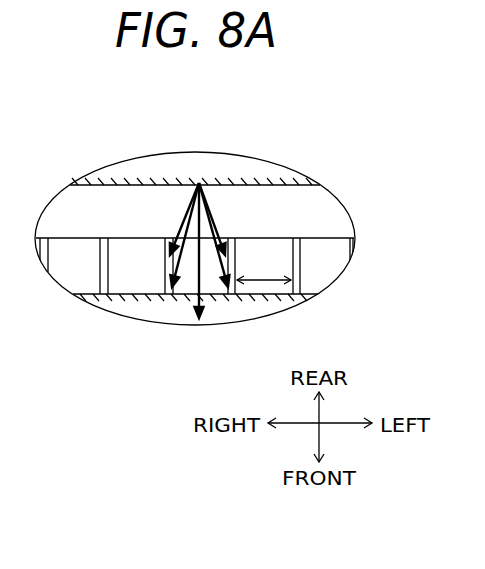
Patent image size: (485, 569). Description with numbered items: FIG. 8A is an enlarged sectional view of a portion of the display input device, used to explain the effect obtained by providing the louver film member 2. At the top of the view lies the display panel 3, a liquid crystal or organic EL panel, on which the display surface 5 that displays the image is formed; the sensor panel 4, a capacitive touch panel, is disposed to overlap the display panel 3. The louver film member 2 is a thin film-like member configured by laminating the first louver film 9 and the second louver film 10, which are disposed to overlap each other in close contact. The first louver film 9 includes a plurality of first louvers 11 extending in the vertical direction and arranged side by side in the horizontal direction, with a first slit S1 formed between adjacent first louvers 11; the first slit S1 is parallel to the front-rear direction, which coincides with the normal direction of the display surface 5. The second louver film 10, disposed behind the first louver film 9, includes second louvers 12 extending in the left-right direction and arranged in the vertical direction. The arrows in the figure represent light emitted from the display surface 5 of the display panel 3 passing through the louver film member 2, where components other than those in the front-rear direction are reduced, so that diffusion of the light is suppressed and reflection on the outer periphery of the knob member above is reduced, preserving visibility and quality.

The louver film member 2 is at (383, 241).
The display panel 3 is at (238, 165).
The sensor panel 4 is at (250, 312).
The display surface 5 is at (102, 186).
The first louver film 9 is at (336, 265).
The second louver film 10 is at (336, 221).
The first louver 11 is at (294, 283).
The second louver 12 is at (268, 202).
The first slit S1 is at (264, 269).